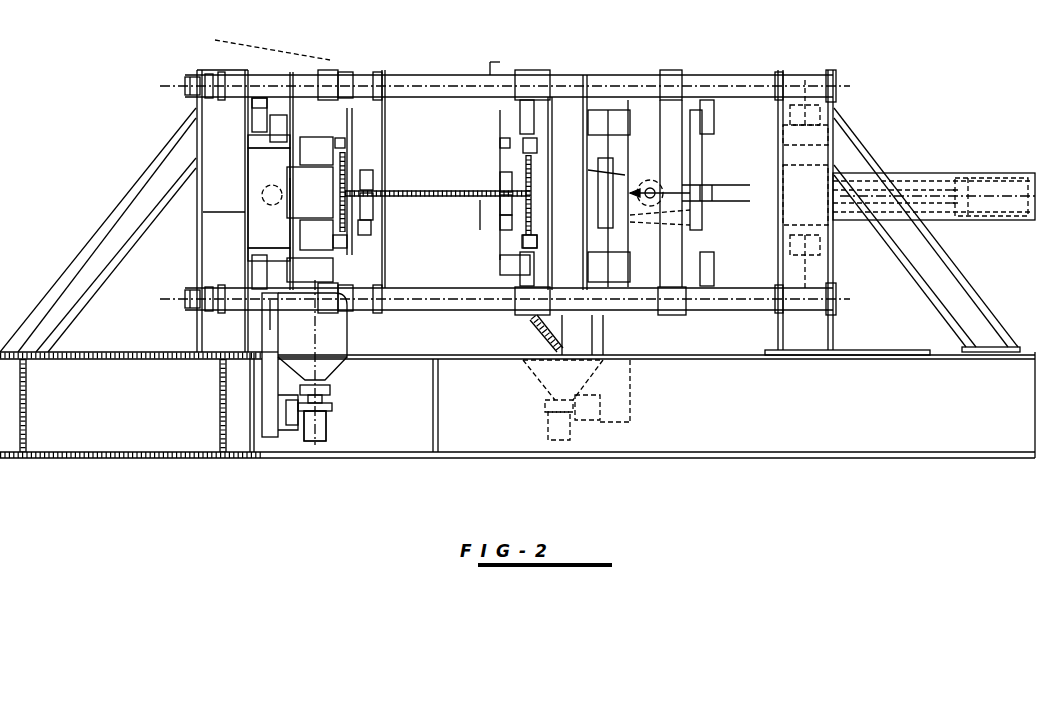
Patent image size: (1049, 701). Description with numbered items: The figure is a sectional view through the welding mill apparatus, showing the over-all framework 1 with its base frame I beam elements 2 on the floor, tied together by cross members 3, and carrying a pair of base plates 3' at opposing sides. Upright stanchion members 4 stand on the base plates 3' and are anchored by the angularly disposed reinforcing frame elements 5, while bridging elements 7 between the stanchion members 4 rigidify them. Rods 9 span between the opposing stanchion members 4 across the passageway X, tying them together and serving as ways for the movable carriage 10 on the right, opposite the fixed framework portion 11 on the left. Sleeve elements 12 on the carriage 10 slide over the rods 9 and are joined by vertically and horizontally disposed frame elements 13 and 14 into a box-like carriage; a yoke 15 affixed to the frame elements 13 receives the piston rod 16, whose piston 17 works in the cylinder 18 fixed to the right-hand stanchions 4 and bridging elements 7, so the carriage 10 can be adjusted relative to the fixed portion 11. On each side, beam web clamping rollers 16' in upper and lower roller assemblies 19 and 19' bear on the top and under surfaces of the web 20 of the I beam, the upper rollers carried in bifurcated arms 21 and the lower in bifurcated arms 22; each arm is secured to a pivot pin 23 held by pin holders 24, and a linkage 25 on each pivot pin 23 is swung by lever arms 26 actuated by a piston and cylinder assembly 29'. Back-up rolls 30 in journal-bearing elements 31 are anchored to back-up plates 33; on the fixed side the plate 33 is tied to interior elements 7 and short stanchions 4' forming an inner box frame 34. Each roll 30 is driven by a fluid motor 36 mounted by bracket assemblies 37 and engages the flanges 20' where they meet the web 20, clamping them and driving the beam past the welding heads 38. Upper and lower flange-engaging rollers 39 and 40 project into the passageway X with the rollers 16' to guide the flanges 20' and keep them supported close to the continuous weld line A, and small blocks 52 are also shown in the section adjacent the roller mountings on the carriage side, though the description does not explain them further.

The framework 1 is at (852, 460).
The base frame I beam element 2 is at (386, 421).
The cross member 3 is at (123, 405).
The base plate 3' is at (501, 335).
The stanchion member 4 is at (538, 212).
The short stanchion 4' is at (251, 198).
The reinforcing frame element 5 is at (52, 285).
The bridging element 7 is at (215, 72).
The rod 9 is at (430, 80).
The movable carriage 10 is at (600, 95).
The fixed framework portion 11 is at (270, 72).
The sleeve element 12 is at (585, 75).
The vertically disposed frame element 13 is at (612, 110).
The horizontally disposed frame element 14 is at (538, 95).
The yoke 15 is at (705, 212).
The piston rod 16 is at (726, 174).
The beam web clamping roller 16' is at (436, 207).
The piston 17 is at (968, 180).
The cylinder 18 is at (916, 178).
The upper roller assembly 19 is at (436, 181).
The lower roller assembly 19' is at (435, 230).
The web 20 is at (460, 215).
The flange 20' is at (457, 194).
The bifurcated arm 21 is at (355, 150).
The bifurcated arm 22 is at (335, 268).
The pivot pin 23 is at (350, 135).
The pin holder 24 is at (258, 98).
The linkage 25 is at (262, 140).
The lever arm 26 is at (660, 185).
The piston and cylinder assembly 29' is at (676, 222).
The back-up roll 30 is at (290, 195).
The journal-bearing element 31 is at (305, 150).
The back-up plate 33 is at (292, 100).
The inner box frame 34 is at (240, 212).
The fluid motor 36 is at (347, 330).
The bracket assembly 37 is at (272, 460).
The welding head 38 is at (350, 182).
The upper flange-engaging roller 39 is at (348, 165).
The lower flange engaging roller 40 is at (347, 242).
The retainer block 52 is at (537, 146).
The weld line A is at (270, 200).
The passageway X is at (455, 180).